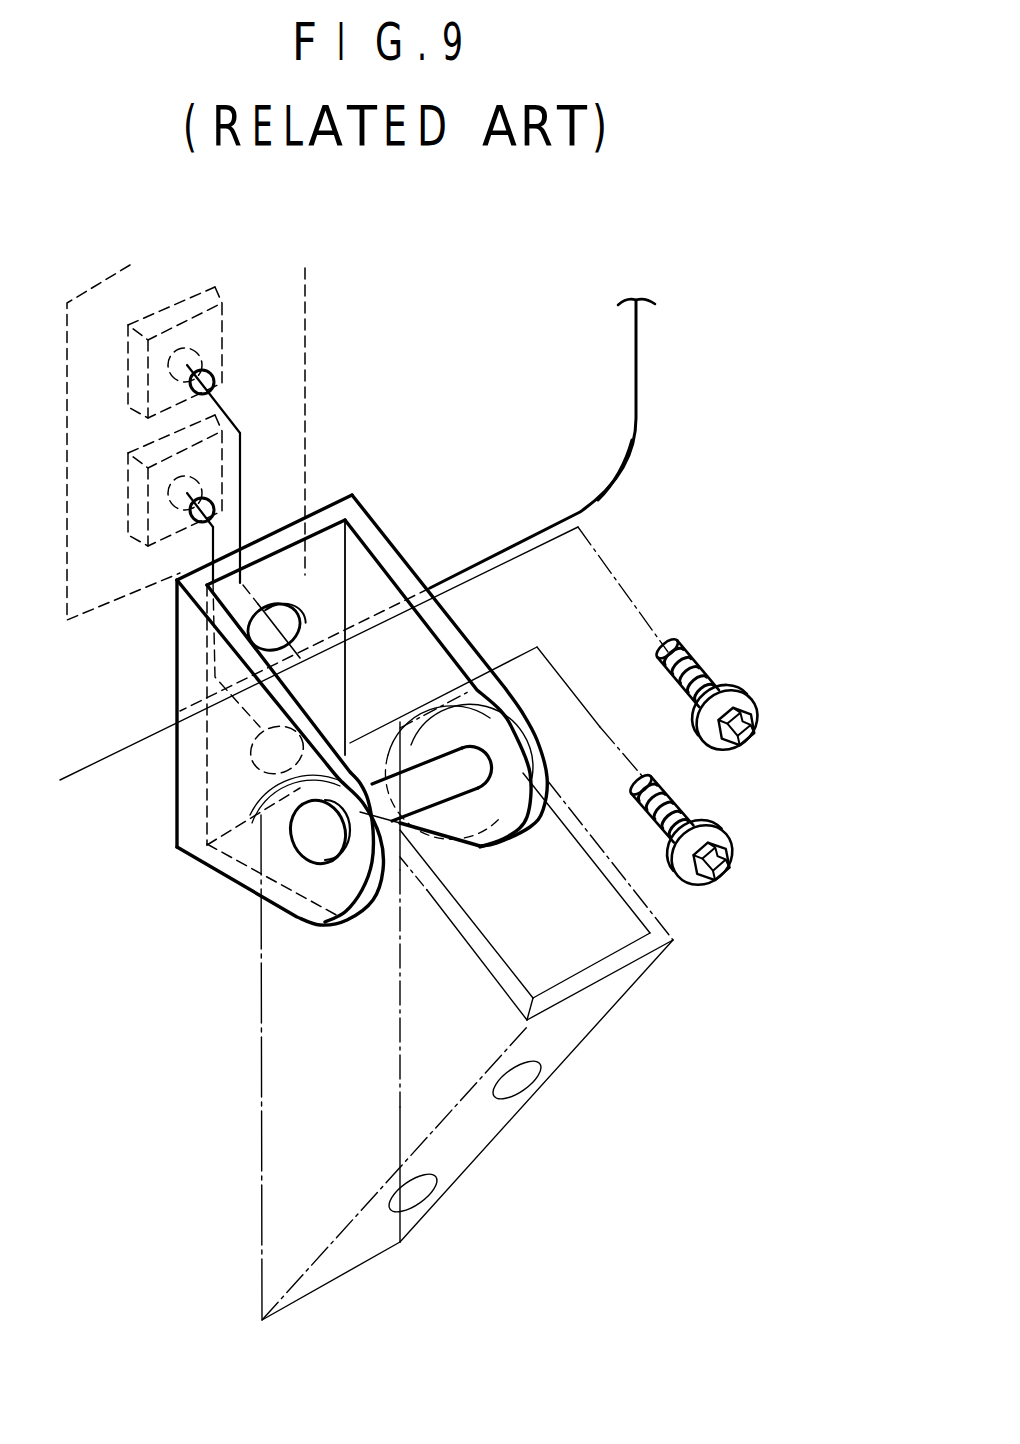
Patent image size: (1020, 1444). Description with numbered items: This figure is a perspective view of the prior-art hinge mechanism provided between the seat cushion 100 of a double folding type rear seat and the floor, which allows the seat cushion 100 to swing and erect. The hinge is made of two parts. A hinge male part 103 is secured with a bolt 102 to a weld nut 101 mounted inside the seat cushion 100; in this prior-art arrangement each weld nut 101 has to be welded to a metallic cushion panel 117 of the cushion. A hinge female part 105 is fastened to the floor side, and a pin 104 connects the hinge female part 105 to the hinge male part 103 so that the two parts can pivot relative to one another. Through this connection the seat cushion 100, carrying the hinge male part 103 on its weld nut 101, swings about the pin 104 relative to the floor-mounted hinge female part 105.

The seat cushion 100 is at (642, 398).
The weld nut 101 is at (225, 330).
The bolt 102 is at (767, 703).
The hinge male part 103 is at (375, 537).
The pin 104 is at (453, 780).
The hinge female part 105 is at (510, 1125).
The metallic cushion panel 117 is at (587, 476).